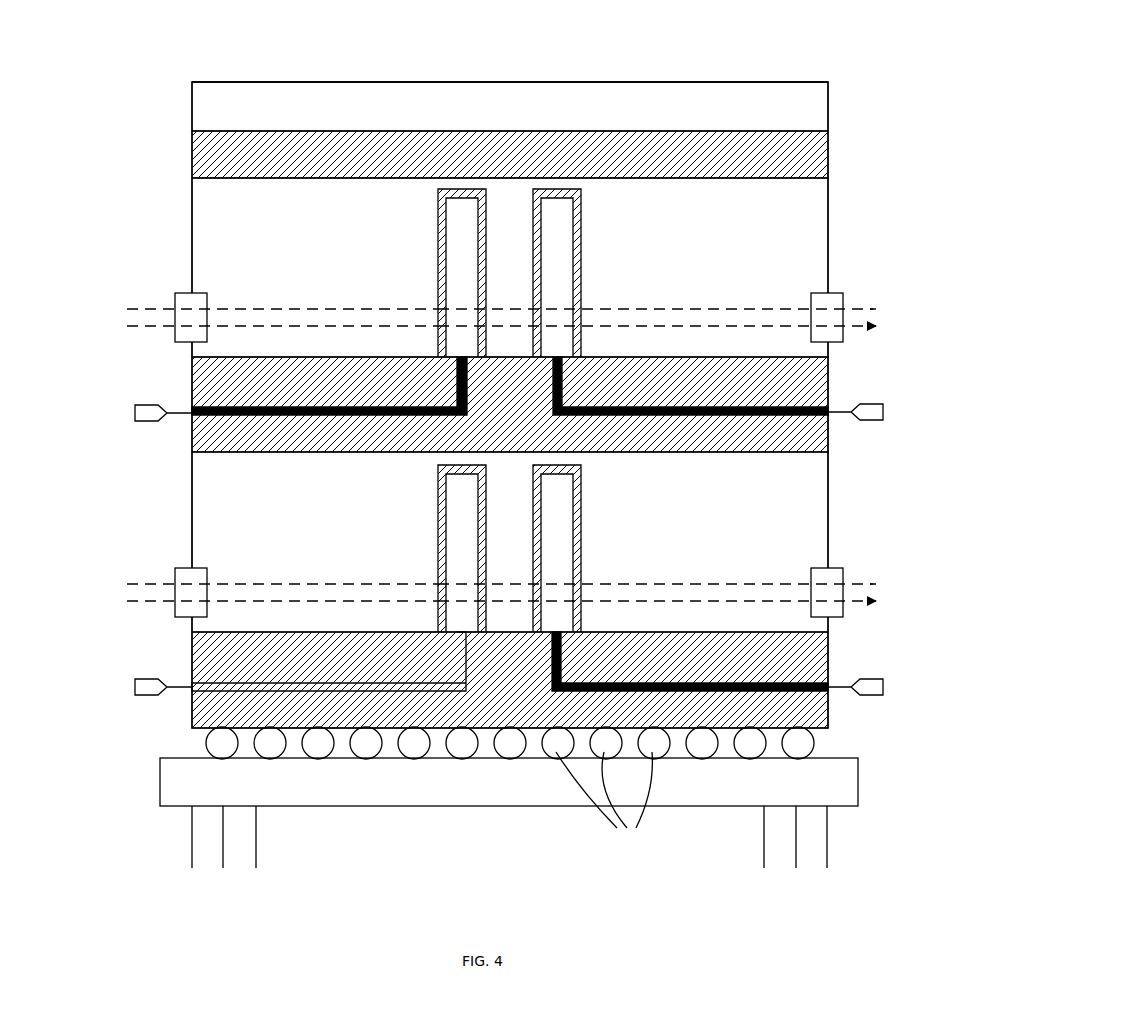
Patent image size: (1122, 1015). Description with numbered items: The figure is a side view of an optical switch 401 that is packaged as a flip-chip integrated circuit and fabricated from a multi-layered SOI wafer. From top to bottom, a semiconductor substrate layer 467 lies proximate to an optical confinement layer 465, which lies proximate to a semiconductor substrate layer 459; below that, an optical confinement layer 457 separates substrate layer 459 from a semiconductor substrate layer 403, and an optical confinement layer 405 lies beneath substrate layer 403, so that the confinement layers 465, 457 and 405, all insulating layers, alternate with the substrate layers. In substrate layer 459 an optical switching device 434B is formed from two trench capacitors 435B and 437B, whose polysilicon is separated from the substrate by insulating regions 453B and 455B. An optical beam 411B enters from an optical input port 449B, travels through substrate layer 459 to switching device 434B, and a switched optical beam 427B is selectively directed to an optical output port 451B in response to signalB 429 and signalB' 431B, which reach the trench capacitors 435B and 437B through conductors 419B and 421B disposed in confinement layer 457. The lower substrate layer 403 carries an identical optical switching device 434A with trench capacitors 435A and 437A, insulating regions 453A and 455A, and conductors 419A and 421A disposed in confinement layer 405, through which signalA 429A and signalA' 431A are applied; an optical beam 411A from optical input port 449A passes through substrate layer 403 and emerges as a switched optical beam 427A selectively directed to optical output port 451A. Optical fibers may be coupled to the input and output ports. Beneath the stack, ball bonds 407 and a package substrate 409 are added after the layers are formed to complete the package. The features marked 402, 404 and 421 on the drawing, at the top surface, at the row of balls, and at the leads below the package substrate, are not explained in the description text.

The optical switch 401 is at (864, 56).
The top surface of module 402 is at (766, 82).
The semiconductor substrate layer 467 is at (820, 108).
The optical confinement layer 465 is at (822, 157).
The semiconductor substrate layer 459 is at (818, 230).
The optical switching device 434B is at (551, 273).
The insulating region 453B is at (483, 255).
The trench capacitor 435B is at (463, 296).
The insulating region 455B is at (580, 255).
The trench capacitor 437B is at (557, 296).
The optical input port 449B is at (182, 293).
The optical output port 451B is at (832, 293).
The optical beam 411B is at (125, 297).
The switched optical beam 427B is at (895, 297).
The optical confinement layer 457 is at (830, 397).
The conductor 419B is at (452, 374).
The conductor 421B is at (563, 373).
The signalB 429 is at (105, 398).
The signalB' 431B is at (905, 398).
The semiconductor substrate layer 403 is at (830, 488).
The optical switching device 434A is at (551, 548).
The insulating region 453A is at (483, 530).
The trench capacitor 435A is at (463, 571).
The insulating region 455A is at (580, 530).
The trench capacitor 437A is at (557, 571).
The optical input port 449A is at (182, 568).
The optical output port 451A is at (832, 568).
The optical beam 411A is at (125, 572).
The switched optical beam 427A is at (895, 572).
The optical confinement layer 405 is at (830, 668).
The conductor 419A is at (452, 650).
The conductor 421A is at (563, 648).
The signalA 429A is at (105, 673).
The signalA' 431A is at (905, 673).
The solder balls 404 is at (822, 728).
The ball bonds 407 is at (604, 804).
The package substrate 409 is at (860, 785).
The connection pins 421 is at (270, 877).